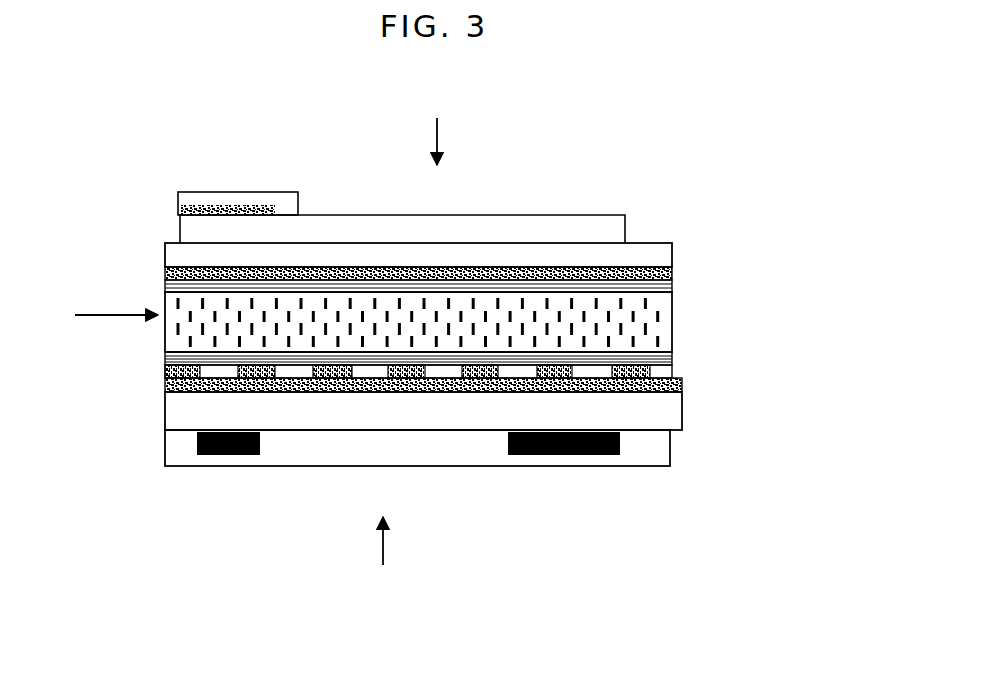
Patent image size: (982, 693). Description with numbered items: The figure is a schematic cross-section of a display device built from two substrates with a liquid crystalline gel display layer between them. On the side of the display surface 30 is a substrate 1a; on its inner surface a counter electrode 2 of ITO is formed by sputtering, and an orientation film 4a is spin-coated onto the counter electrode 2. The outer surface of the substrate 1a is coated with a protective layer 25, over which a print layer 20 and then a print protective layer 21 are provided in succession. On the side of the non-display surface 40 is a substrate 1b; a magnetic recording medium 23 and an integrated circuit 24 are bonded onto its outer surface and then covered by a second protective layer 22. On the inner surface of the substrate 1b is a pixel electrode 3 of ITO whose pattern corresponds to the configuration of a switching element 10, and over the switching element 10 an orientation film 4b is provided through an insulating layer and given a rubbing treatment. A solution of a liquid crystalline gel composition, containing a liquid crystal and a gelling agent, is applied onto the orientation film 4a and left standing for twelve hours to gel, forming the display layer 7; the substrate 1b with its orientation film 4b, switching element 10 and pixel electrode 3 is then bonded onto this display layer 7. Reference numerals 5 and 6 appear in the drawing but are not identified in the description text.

The substrate 1a is at (675, 255).
The substrate 1b is at (665, 418).
The counter electrode 2 is at (675, 272).
The pixel electrode 3 is at (682, 388).
The orientation film 4a is at (675, 283).
The orientation film 4b is at (668, 360).
The alignment boundary 5 is at (378, 340).
The liquid crystal layer 6 is at (442, 312).
The display layer 7 is at (106, 316).
The switching element 10 is at (165, 370).
The print layer 20 is at (245, 208).
The print protective layer 21 is at (272, 192).
The second protective layer 22 is at (323, 443).
The magnetic recording medium 23 is at (198, 448).
The integrated circuit 24 is at (600, 455).
The protective layer 25 is at (595, 230).
The display surface 30 is at (440, 121).
The non-display surface 40 is at (388, 556).